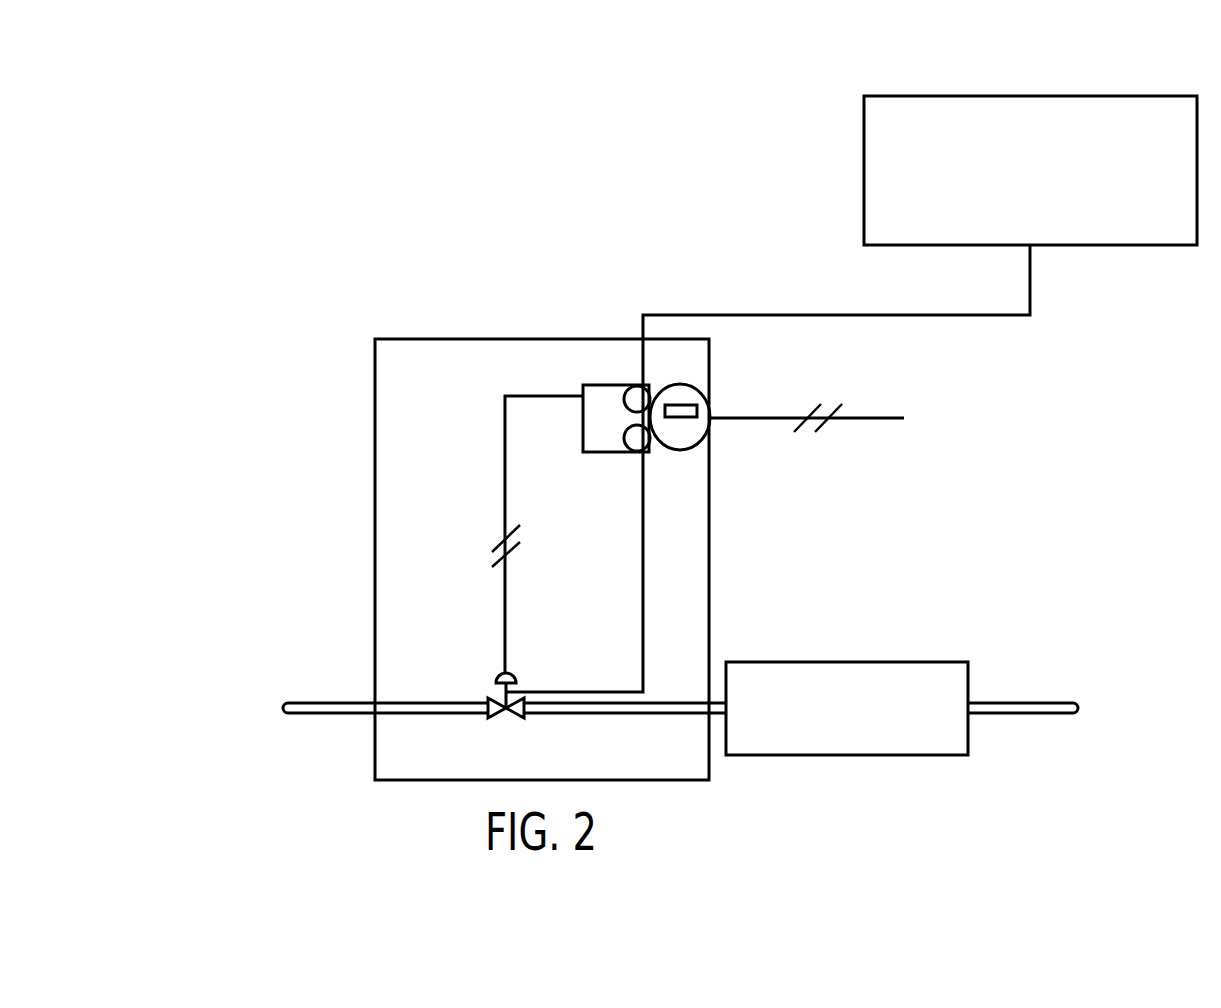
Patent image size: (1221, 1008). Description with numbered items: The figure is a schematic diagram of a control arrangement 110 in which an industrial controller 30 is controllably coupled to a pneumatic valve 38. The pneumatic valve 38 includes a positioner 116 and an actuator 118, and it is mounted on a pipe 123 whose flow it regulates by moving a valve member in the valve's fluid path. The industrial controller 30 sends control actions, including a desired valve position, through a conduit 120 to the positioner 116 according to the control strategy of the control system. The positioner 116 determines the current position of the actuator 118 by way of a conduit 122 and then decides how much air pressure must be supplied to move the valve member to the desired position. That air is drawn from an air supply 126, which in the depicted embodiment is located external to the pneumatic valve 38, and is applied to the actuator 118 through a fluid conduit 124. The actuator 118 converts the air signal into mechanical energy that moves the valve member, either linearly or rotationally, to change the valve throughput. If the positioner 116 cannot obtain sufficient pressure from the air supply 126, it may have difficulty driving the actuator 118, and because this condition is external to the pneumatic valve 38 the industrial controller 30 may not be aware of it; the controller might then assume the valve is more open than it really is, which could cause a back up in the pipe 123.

The control system 110 is at (345, 168).
The industrial controller 30 is at (864, 170).
The conduit 120 is at (800, 315).
The pneumatic valve 38 is at (375, 402).
The positioner 116 is at (616, 385).
The air supply 126 is at (912, 412).
The fluid conduit 124 is at (505, 396).
The conduit 122 is at (643, 570).
The actuator 118 is at (505, 692).
The pipe 123 is at (283, 705).